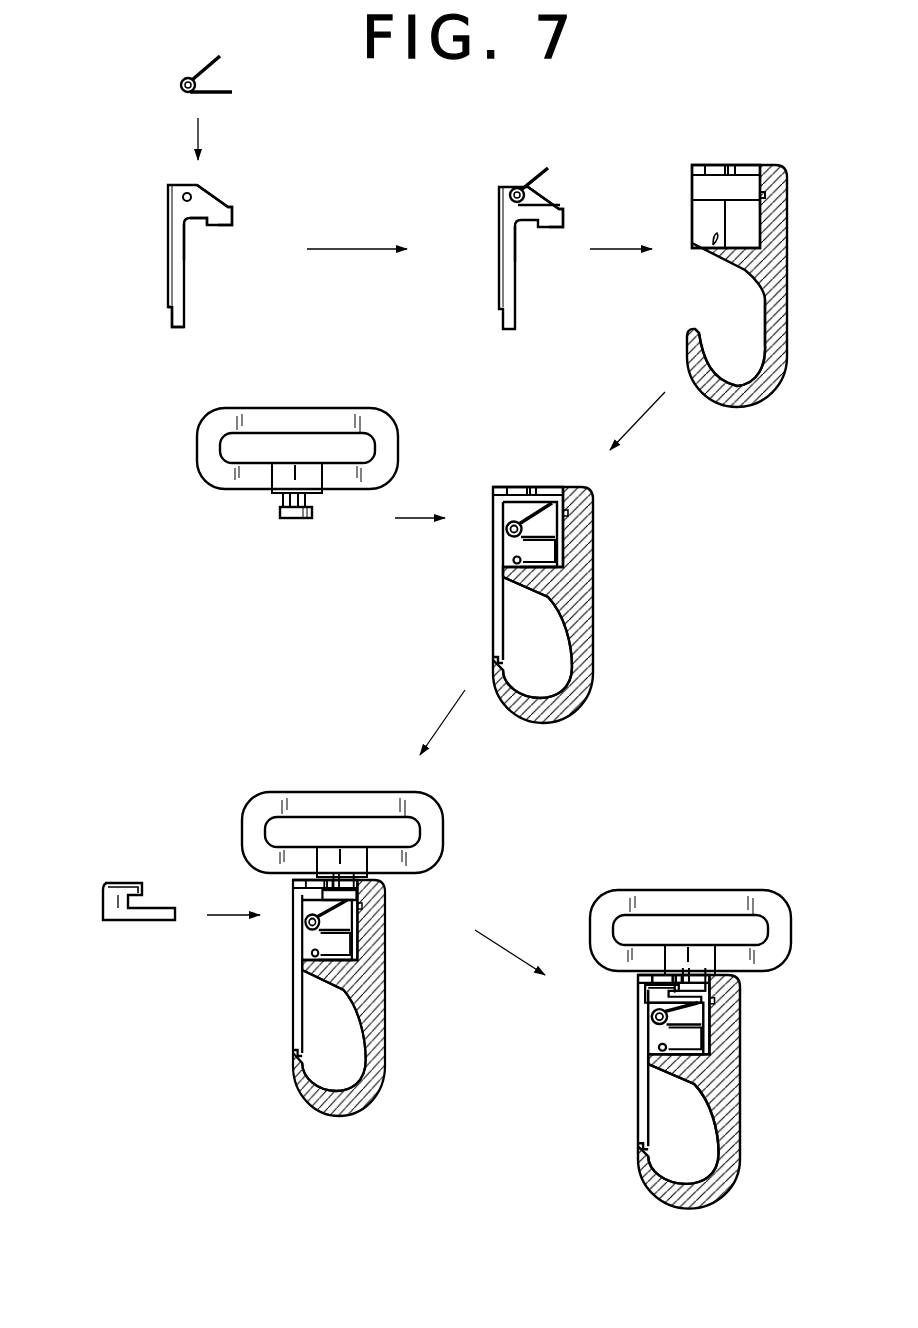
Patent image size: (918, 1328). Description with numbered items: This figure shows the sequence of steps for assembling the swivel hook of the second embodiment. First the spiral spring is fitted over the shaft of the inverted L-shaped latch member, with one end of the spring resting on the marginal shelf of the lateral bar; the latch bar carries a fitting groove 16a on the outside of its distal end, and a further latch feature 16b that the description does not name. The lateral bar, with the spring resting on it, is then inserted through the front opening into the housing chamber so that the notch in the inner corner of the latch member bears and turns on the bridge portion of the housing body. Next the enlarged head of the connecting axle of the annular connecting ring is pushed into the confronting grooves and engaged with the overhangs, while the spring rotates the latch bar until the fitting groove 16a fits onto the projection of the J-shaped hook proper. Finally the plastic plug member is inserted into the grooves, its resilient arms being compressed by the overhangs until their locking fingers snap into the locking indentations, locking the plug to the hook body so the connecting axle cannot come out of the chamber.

The fitting groove 16a is at (170, 318).
The latch notch 16b is at (210, 226).